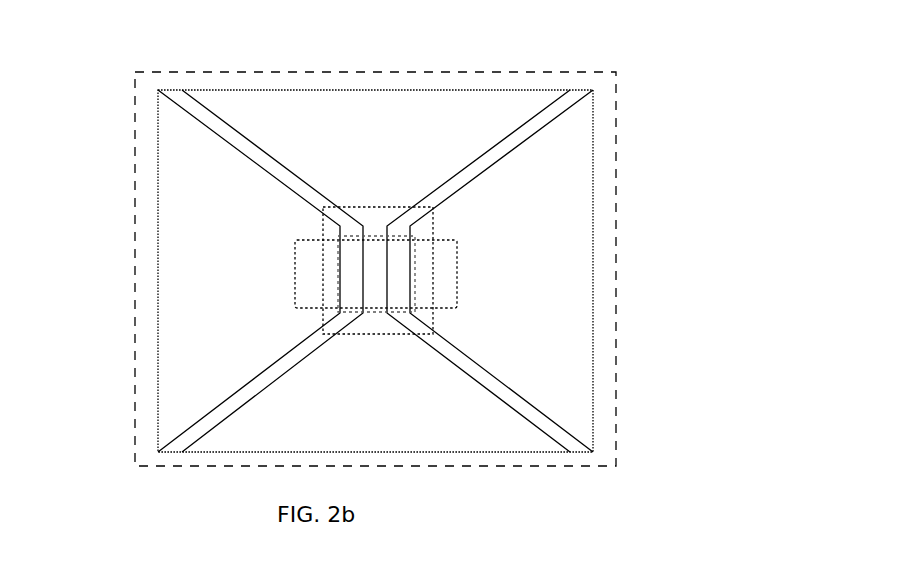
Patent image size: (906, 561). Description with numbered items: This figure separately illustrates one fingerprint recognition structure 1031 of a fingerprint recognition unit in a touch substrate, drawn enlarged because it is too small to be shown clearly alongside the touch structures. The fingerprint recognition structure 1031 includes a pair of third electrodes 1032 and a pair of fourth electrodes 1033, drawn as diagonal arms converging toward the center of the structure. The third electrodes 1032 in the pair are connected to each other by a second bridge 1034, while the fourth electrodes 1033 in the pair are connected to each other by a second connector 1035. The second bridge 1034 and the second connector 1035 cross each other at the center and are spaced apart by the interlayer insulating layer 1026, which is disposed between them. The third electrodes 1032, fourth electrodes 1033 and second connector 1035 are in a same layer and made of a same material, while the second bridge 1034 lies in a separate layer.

The fingerprint recognition structure 1031 is at (384, 72).
The third electrodes 1032 is at (158, 227).
The fourth electrodes 1033 is at (476, 90).
The second bridge 1034 is at (457, 268).
The second connector 1035 is at (368, 207).
The interlayer insulating layer 1026 is at (337, 275).